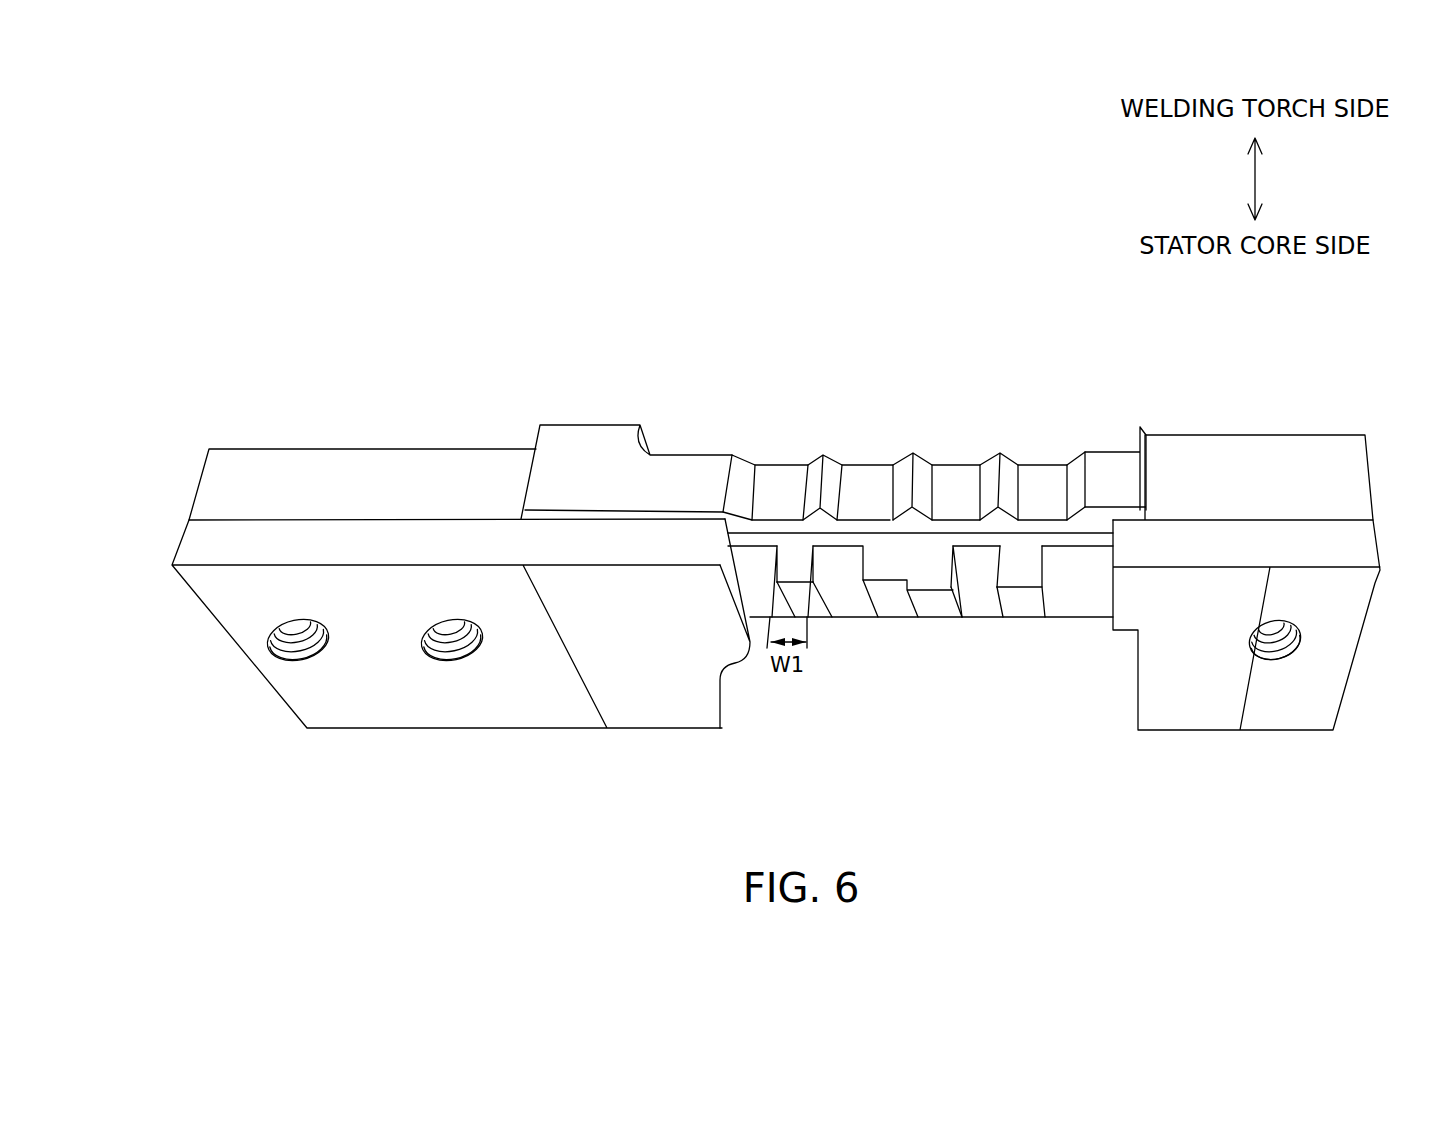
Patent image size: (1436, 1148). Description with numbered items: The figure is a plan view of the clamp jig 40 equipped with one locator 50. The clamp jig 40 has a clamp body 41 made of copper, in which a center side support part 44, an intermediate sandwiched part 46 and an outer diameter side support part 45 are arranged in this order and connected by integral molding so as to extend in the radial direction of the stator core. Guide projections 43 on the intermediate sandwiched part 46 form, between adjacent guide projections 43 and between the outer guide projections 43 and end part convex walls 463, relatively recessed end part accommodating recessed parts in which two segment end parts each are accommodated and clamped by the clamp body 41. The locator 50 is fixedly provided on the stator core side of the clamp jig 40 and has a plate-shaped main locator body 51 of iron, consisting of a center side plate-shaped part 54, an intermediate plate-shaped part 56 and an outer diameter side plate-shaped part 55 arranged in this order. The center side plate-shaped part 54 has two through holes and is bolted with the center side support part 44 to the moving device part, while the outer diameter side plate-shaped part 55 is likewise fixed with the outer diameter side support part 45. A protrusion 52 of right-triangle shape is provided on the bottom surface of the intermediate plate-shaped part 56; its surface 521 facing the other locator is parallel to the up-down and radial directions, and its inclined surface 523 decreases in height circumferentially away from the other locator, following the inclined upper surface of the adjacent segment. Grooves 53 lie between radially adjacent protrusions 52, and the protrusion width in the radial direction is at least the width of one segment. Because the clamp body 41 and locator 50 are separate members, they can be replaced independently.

The clamp jig 40 is at (262, 325).
The clamp body 41 is at (683, 447).
The guide projection 43 is at (913, 463).
The center side support part 44 is at (370, 447).
The outer diameter side support part 45 is at (1242, 467).
The intermediate sandwiched part 46 is at (807, 465).
The end part convex wall 463 is at (737, 465).
The locator 50 is at (258, 790).
The main locator body 51 is at (739, 677).
The protrusion 52 is at (797, 567).
The surface 521 is at (938, 619).
The inclined surface 523 is at (948, 603).
The groove 53 is at (847, 603).
The center side plate-shaped part 54 is at (447, 705).
The outer diameter side plate-shaped part 55 is at (1287, 705).
The intermediate plate-shaped part 56 is at (878, 613).